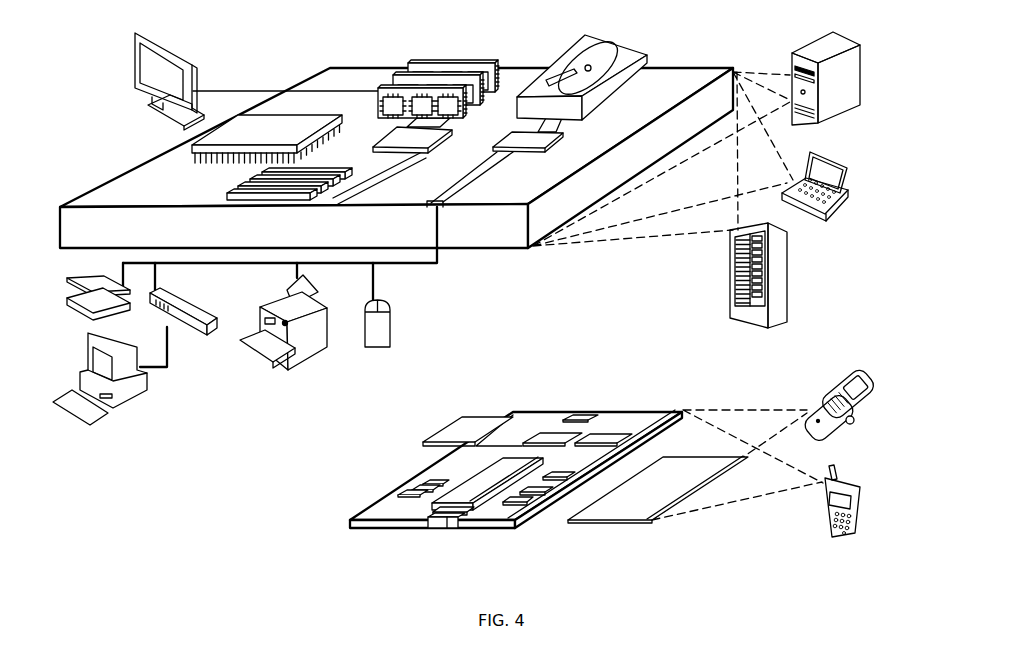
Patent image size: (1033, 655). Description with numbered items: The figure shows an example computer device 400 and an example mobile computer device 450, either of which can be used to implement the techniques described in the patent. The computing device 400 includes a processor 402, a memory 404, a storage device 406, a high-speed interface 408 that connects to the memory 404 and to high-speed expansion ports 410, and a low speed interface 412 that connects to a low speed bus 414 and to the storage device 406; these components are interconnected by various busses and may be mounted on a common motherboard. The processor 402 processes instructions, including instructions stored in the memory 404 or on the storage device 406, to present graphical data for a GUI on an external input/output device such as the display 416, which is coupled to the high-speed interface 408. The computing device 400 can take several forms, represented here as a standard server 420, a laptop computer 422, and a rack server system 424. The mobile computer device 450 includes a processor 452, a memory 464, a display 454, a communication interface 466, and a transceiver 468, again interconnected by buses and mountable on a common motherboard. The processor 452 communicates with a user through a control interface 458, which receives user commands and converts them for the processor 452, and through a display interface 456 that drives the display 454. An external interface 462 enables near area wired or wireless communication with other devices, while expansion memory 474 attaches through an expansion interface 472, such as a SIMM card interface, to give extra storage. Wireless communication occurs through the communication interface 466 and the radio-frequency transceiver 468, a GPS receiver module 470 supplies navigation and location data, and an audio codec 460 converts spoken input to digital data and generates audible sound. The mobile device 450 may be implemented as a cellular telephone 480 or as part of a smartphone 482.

The computing device 400 is at (277, 50).
The processor 402 is at (190, 149).
The memory 404 is at (413, 64).
The storage device 406 is at (573, 56).
The high-speed interface 408 is at (380, 132).
The high-speed expansion ports 410 is at (235, 186).
The low speed interface 412 is at (518, 135).
The low speed bus 414 is at (438, 208).
The display 416 is at (136, 40).
The standard server 420 is at (792, 54).
The laptop computer 422 is at (811, 153).
The rack server system 424 is at (730, 291).
The mobile computer device 450 is at (502, 395).
The processor 452 is at (465, 512).
The display 454 is at (655, 522).
The display interface 456 is at (519, 512).
The control interface 458 is at (557, 506).
The audio codec 460 is at (558, 480).
The external interface 462 is at (448, 522).
The memory 464 is at (412, 496).
The communication interface 466 is at (553, 437).
The transceiver 468 is at (604, 436).
The GPS receiver module 470 is at (580, 420).
The expansion interface 472 is at (500, 420).
The expansion memory 474 is at (447, 419).
The cellular telephone 480 is at (841, 370).
The smartphone 482 is at (829, 467).